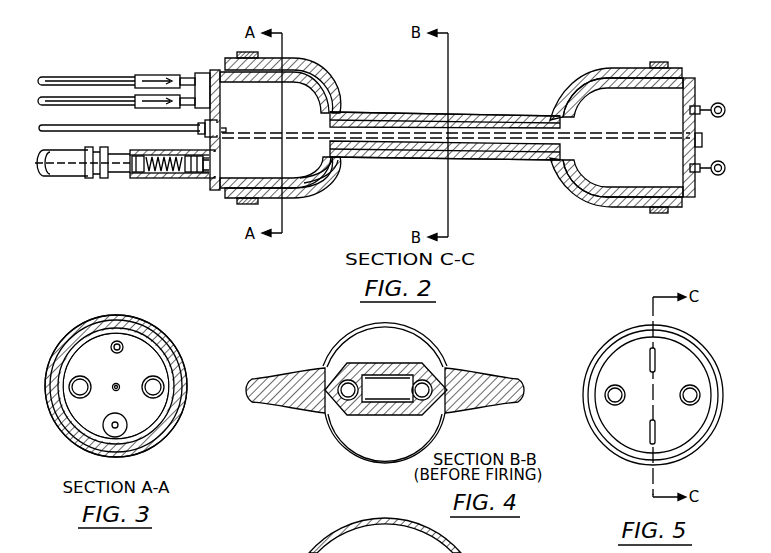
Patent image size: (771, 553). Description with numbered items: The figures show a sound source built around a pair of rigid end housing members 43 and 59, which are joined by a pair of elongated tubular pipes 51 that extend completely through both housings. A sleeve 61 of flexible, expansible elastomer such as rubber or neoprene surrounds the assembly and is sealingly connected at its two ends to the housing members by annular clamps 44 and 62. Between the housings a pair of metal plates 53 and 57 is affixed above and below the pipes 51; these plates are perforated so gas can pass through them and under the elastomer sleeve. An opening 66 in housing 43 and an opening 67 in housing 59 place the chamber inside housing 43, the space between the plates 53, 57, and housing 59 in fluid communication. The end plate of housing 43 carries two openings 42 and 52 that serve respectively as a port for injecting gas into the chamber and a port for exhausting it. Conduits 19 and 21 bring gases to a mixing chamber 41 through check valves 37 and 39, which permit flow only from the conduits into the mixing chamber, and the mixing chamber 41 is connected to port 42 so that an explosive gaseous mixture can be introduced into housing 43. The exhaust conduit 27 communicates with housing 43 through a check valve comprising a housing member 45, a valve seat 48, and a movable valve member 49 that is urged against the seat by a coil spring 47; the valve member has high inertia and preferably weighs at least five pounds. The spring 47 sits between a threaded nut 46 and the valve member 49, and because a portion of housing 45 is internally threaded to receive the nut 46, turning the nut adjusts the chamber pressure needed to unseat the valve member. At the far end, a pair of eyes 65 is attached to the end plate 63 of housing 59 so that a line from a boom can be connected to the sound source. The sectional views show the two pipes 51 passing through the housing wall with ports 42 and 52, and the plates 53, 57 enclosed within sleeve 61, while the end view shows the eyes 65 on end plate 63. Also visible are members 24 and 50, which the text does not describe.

In FIG. 2, the conduit 19 is at (57, 78).
In FIG. 2, the conduit 21 is at (95, 103).
In FIG. 2, the firing rod 24 is at (83, 129).
In FIG. 2, the exhaust conduit 27 is at (73, 172).
In FIG. 2, the check valve 37 is at (170, 75).
In FIG. 2, the check valve 39 is at (162, 108).
In FIG. 2, the mixing chamber 41 is at (197, 78).
In FIG. 2, the opening 42 is at (217, 90).
In FIG. 3, the opening 42 is at (121, 343).
In FIG. 2, the rigid end housing member 43 is at (303, 72).
In FIG. 2, the annular clamp 44 is at (245, 203).
In FIG. 2, the housing member 45 is at (150, 152).
In FIG. 2, the threaded nut 46 is at (147, 174).
In FIG. 2, the coil spring 47 is at (170, 176).
In FIG. 2, the valve seat 48 is at (207, 182).
In FIG. 2, the movable valve member 49 is at (200, 176).
In FIG. 2, the central bushing 50 is at (221, 129).
In FIG. 3, the central bushing 50 is at (117, 383).
In FIG. 2, the elongated tubular pipe 51 is at (338, 160).
In FIG. 3, the elongated tubular pipe 51 is at (70, 376).
In FIG. 4, the elongated tubular pipe 51 is at (323, 379).
In FIG. 5, the elongated tubular pipe 51 is at (606, 392).
In FIG. 2, the opening 52 is at (218, 165).
In FIG. 3, the opening 52 is at (118, 431).
In FIG. 2, the metal plate 53 is at (390, 114).
In FIG. 4, the metal plate 53 is at (430, 373).
In FIG. 2, the metal plate 57 is at (392, 158).
In FIG. 4, the metal plate 57 is at (400, 418).
In FIG. 2, the rigid end housing member 59 is at (631, 70).
In FIG. 2, the sleeve 61 is at (490, 112).
In FIG. 4, the sleeve 61 is at (338, 427).
In FIG. 2, the annular clamp 62 is at (657, 70).
In FIG. 2, the end plate 63 is at (697, 88).
In FIG. 5, the end plate 63 is at (622, 438).
In FIG. 2, the eye 65 is at (722, 162).
In FIG. 5, the eye 65 is at (658, 350).
In FIG. 2, the opening 66 is at (347, 126).
In FIG. 4, the opening 66 is at (397, 385).
In FIG. 2, the opening 67 is at (558, 111).